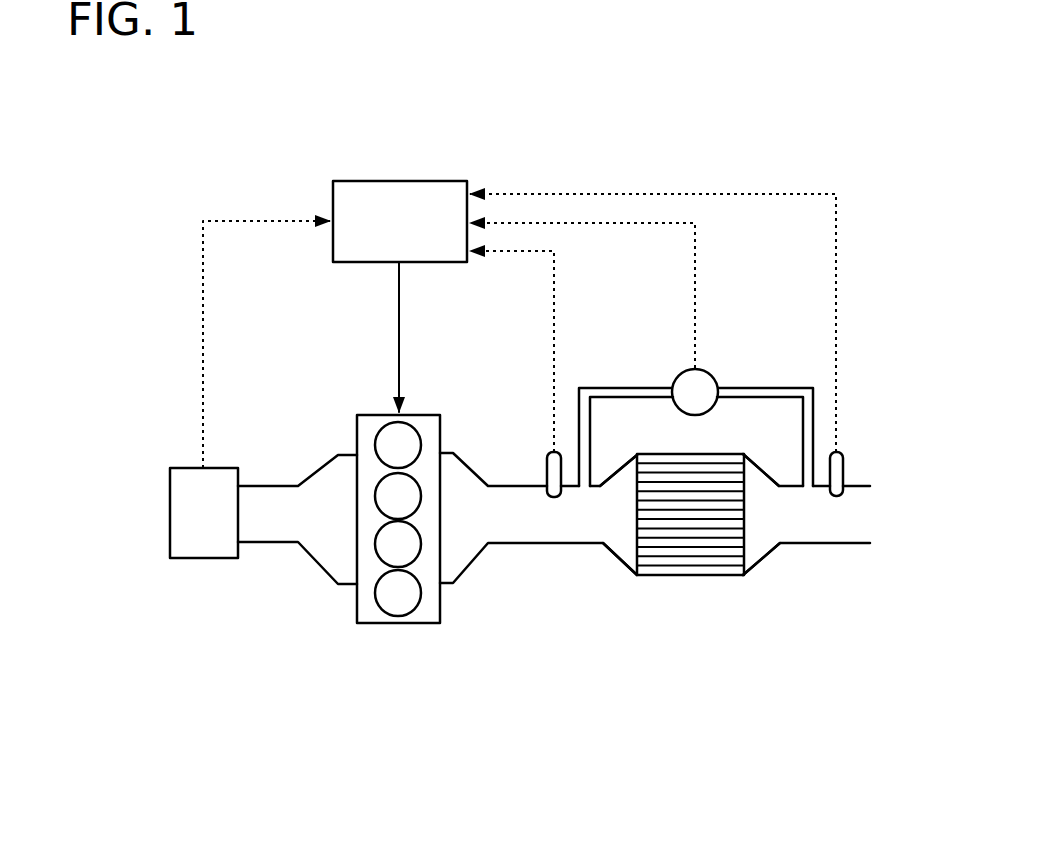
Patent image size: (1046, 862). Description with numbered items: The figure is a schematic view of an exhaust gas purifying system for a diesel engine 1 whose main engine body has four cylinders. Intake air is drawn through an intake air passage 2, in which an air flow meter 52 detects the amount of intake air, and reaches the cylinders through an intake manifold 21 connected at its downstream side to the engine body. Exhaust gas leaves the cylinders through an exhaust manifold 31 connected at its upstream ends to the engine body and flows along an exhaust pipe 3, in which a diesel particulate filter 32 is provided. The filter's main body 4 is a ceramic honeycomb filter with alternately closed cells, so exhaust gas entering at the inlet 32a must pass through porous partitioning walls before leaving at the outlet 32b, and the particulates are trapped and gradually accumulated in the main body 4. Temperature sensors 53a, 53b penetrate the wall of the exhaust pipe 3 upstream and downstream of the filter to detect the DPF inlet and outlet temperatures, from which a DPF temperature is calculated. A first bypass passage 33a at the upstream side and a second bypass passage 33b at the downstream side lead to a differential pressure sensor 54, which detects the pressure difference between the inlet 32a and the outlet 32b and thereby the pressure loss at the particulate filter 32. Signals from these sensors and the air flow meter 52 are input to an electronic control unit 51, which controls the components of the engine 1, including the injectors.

The diesel engine 1 is at (398, 623).
The intake air passage 2 is at (297, 449).
The intake manifold 21 is at (327, 470).
The exhaust pipe 3 is at (653, 504).
The exhaust manifold 31 is at (462, 470).
The diesel particulate filter 32 is at (736, 573).
The inlet 32a is at (610, 522).
The outlet 32b is at (782, 514).
The first bypass passage 33a is at (610, 385).
The second bypass passage 33b is at (787, 385).
The main body of particulate filter 4 is at (703, 575).
The electronic control unit 51 is at (402, 181).
The air flow meter 52 is at (203, 558).
The upstream temperature sensor 53a is at (548, 465).
The downstream temperature sensor 53b is at (843, 460).
The differential pressure sensor 54 is at (713, 378).